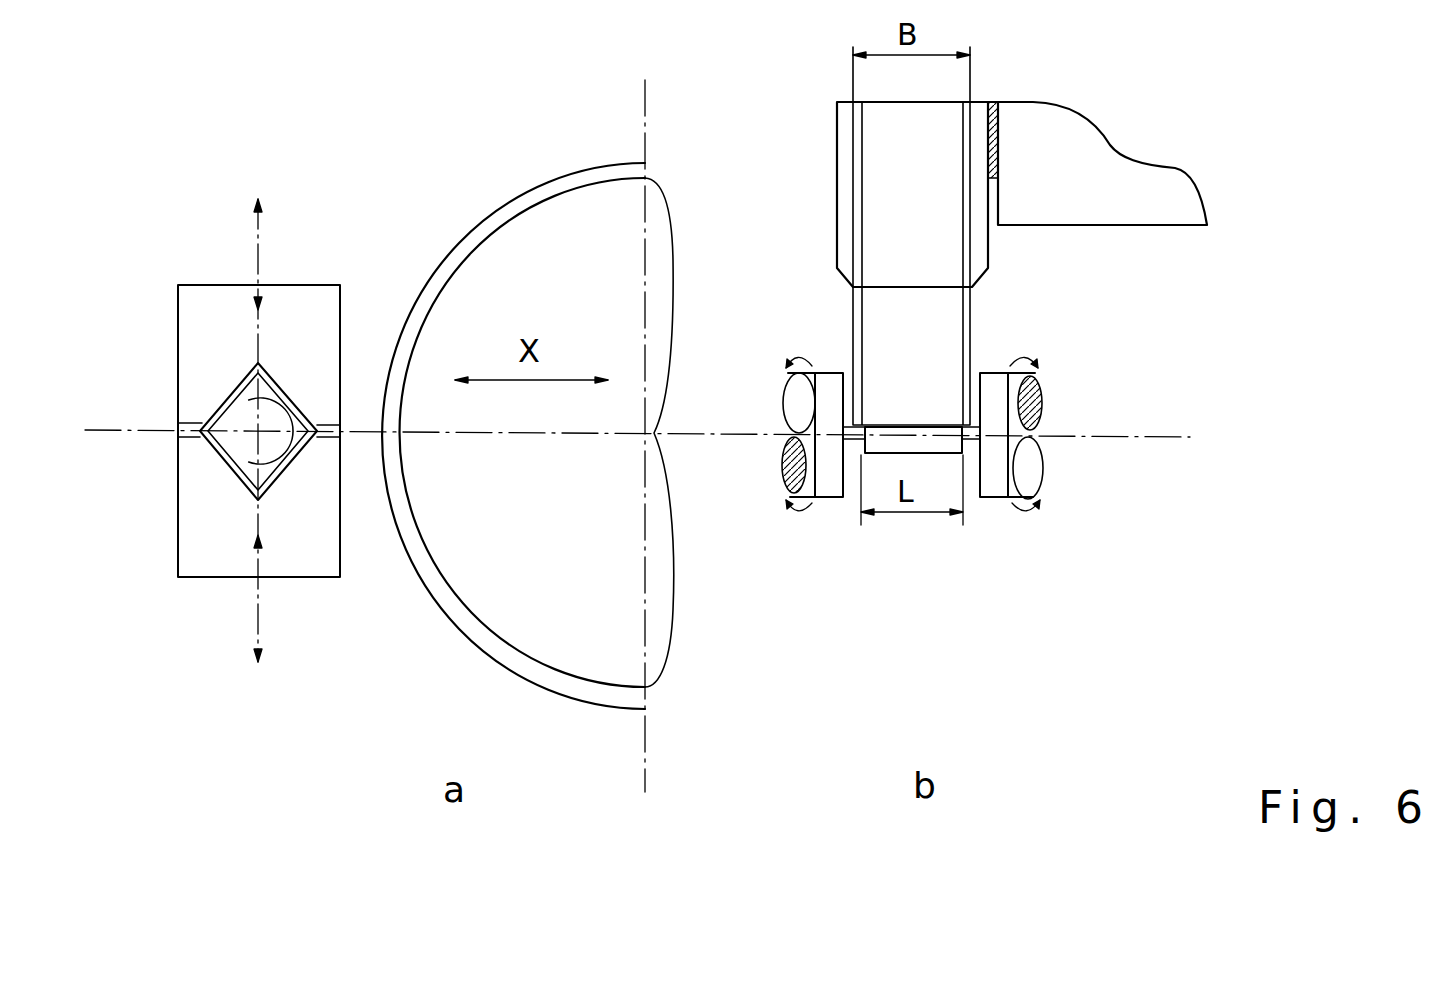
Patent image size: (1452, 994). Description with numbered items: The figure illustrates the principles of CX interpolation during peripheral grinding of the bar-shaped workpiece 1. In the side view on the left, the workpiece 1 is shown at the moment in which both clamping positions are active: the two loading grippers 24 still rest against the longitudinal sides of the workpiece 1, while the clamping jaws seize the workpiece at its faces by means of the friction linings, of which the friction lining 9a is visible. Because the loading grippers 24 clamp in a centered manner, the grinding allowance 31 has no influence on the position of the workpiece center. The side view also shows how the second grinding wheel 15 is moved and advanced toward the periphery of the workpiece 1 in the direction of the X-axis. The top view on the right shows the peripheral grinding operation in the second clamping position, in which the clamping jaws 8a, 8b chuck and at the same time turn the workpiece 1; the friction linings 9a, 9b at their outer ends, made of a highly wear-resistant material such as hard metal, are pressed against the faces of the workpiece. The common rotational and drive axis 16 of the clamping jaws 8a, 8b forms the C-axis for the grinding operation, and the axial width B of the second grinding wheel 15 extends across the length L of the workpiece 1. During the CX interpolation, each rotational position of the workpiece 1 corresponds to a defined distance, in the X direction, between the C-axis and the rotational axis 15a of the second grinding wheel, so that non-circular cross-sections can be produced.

The bar-shaped workpiece 1 is at (222, 467).
The clamping jaw 8a is at (805, 400).
The clamping jaw 8b is at (1002, 393).
The friction lining 9a is at (237, 420).
The friction lining 9b is at (970, 440).
The second grinding wheel 15 is at (565, 288).
The rotational axis of the second grinding wheel 15a is at (646, 433).
The common rotational and drive axis 16 is at (1110, 430).
The loading gripper 24 is at (205, 310).
The grinding allowance 31 is at (222, 397).